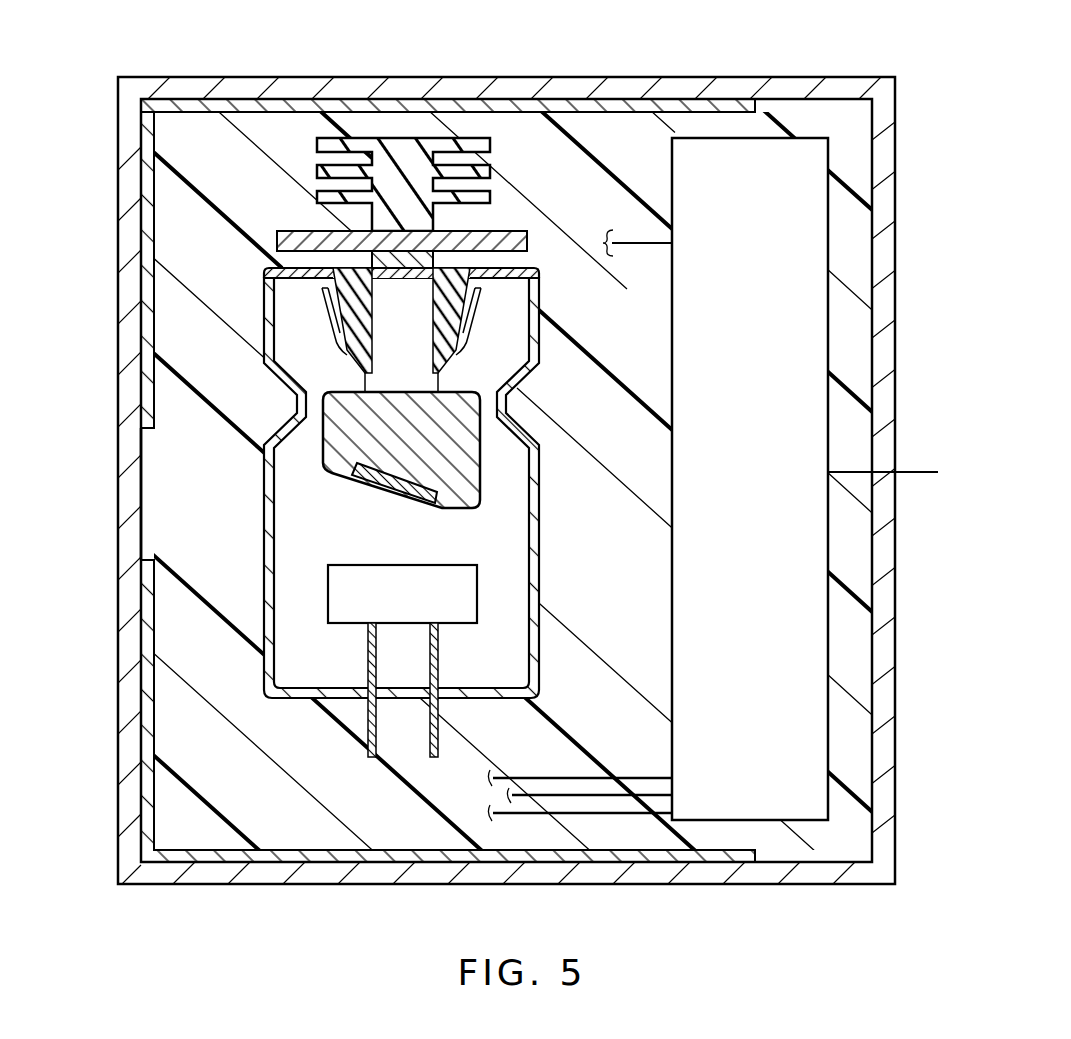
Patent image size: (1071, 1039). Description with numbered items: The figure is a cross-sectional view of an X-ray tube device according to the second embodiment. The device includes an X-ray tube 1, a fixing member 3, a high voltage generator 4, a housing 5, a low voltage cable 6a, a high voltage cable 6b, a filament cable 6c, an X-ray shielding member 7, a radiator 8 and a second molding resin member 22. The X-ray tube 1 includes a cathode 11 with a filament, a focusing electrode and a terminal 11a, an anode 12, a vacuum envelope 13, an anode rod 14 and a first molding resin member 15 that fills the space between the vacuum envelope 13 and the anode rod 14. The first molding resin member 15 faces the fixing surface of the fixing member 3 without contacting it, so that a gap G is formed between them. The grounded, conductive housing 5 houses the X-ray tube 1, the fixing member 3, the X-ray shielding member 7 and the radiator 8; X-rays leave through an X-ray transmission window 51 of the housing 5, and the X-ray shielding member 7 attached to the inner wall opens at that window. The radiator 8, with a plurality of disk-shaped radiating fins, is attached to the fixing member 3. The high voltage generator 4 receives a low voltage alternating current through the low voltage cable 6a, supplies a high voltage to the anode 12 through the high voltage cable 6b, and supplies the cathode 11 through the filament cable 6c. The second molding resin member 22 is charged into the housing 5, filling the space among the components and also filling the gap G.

The X-ray tube 1 is at (337, 476).
The fixing member 3 is at (500, 233).
The high voltage generator 4 is at (795, 155).
The housing 5 is at (524, 92).
The low voltage cable 6a is at (922, 470).
The high voltage cable 6b is at (646, 248).
The filament cable 6c is at (607, 813).
The X-ray shielding member 7 is at (270, 122).
The radiator 8 is at (395, 152).
The cathode 11 is at (350, 563).
The terminal 11a is at (437, 665).
The anode 12 is at (466, 496).
The vacuum envelope 13 is at (528, 487).
The anode rod 14 is at (418, 306).
The first molding resin member 15 is at (348, 280).
The second molding resin member 22 is at (330, 835).
The X-ray transmission window 51 is at (128, 488).
The gap G is at (522, 260).